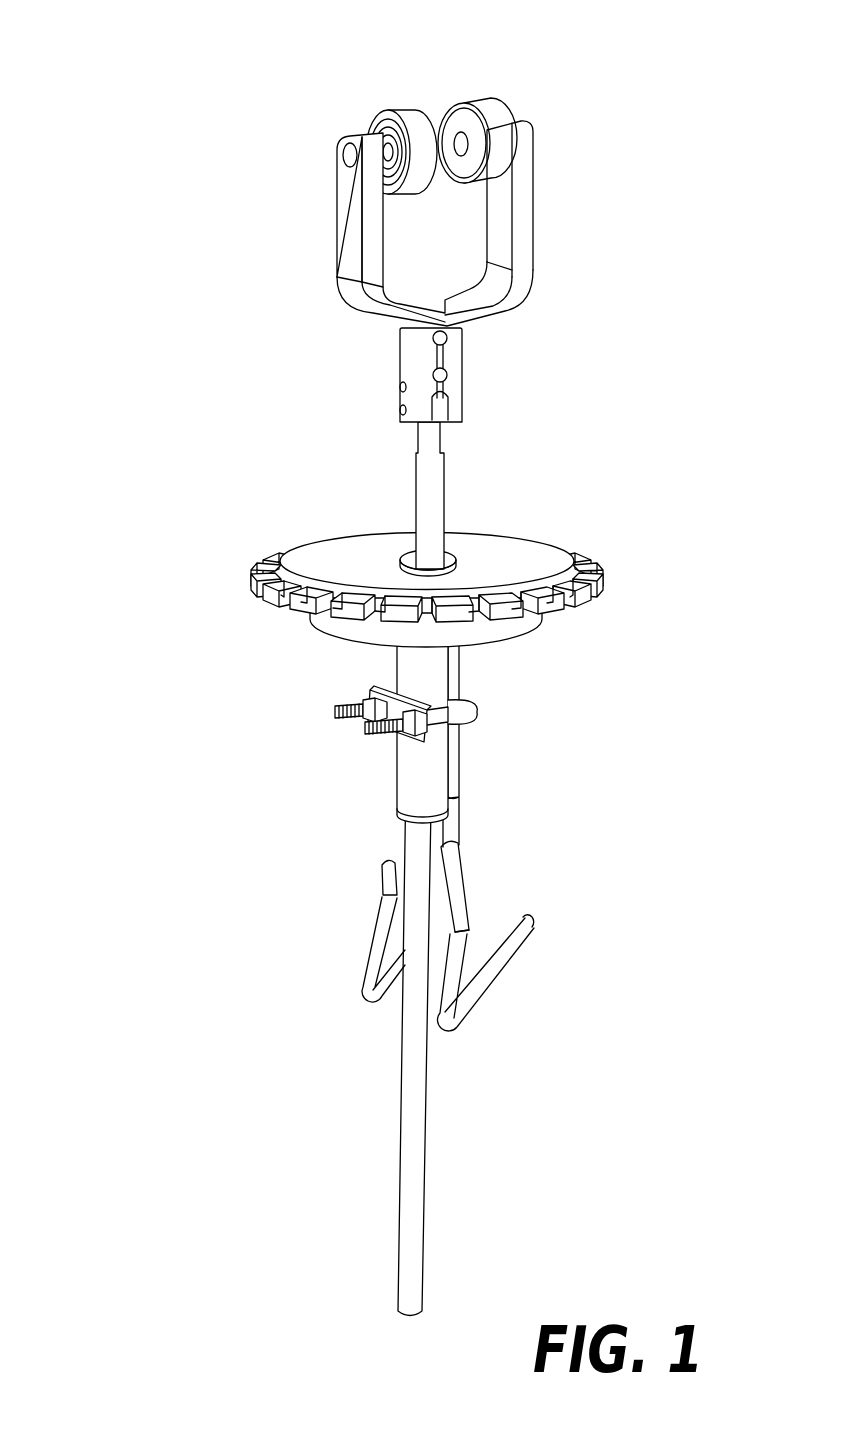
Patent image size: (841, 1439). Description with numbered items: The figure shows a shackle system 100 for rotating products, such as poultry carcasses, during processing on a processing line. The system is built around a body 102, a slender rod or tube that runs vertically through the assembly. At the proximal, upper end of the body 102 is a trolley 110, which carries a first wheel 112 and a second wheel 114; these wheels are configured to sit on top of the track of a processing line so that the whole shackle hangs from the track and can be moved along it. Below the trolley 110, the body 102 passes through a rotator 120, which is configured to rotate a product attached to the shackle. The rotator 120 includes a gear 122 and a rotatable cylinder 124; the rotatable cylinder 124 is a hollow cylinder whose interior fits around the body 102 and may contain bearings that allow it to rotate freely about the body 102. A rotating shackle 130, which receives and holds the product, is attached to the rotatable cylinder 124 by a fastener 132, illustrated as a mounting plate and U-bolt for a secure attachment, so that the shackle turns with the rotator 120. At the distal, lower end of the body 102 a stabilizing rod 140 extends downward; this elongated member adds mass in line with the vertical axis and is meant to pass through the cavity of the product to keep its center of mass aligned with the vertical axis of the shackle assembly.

The shackle system 100 is at (149, 39).
The body 102 is at (443, 498).
The trolley 110 is at (410, 214).
The first wheel 112 is at (365, 128).
The second wheel 114 is at (428, 85).
The rotator 120 is at (385, 558).
The gear 122 is at (248, 573).
The rotatable cylinder 124 is at (397, 780).
The rotating shackle 130 is at (530, 913).
The fastener 132 is at (477, 718).
The stabilizing rod 140 is at (400, 1153).